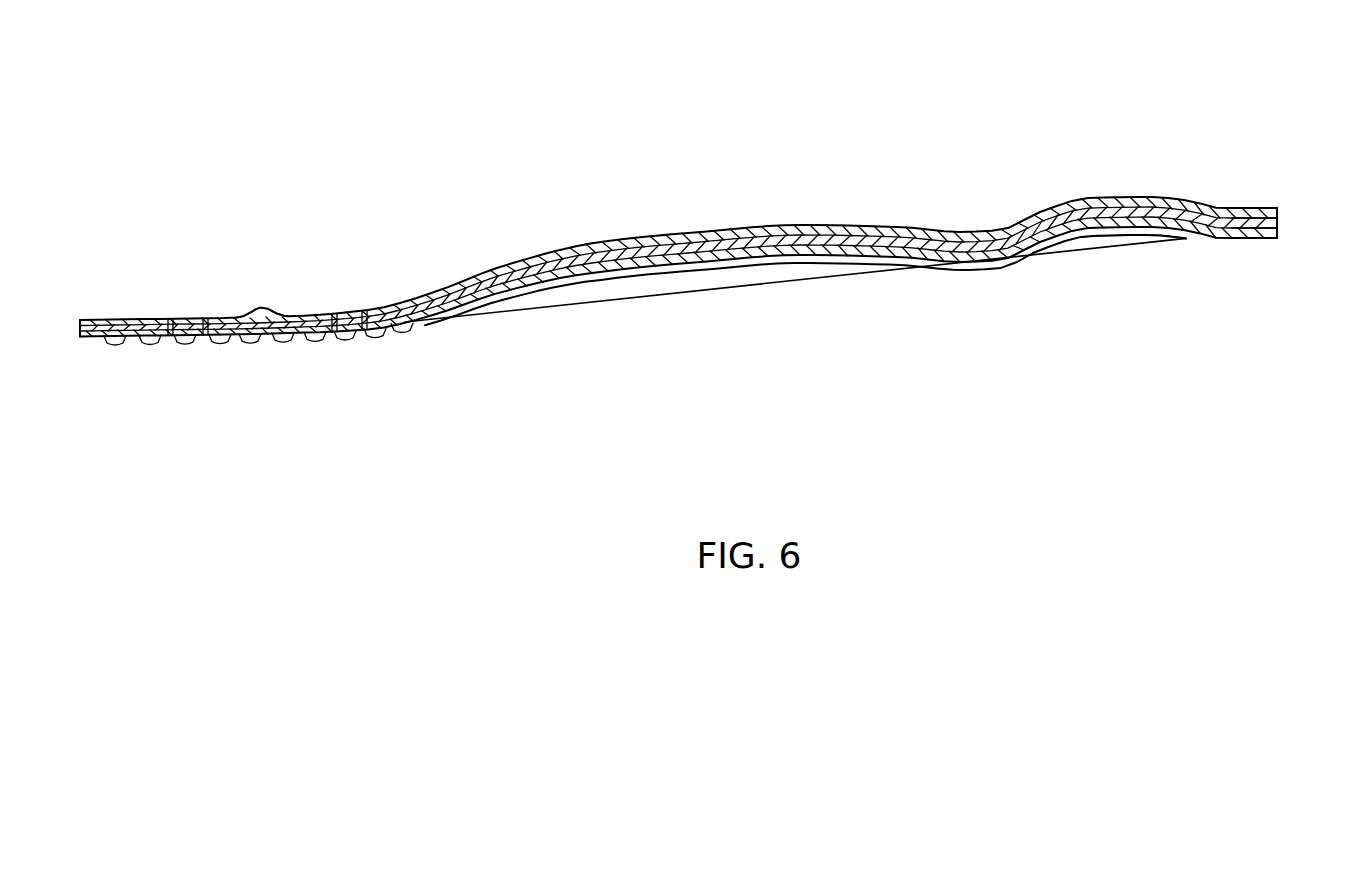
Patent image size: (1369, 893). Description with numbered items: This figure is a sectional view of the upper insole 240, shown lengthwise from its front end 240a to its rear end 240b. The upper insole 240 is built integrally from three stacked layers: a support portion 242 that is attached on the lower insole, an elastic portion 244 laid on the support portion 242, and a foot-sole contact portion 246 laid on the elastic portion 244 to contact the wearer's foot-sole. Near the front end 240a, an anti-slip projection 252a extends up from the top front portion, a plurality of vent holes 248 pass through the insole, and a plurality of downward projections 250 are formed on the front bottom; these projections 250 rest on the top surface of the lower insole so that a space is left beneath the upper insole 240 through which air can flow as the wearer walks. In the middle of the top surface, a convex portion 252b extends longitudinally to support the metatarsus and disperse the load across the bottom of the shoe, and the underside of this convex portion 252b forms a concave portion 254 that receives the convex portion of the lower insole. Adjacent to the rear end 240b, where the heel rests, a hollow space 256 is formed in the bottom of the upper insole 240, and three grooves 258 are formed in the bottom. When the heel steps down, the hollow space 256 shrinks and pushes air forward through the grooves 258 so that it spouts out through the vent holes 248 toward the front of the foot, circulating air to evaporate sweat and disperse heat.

The upper insole 240 is at (580, 146).
The front end 240a is at (95, 275).
The rear end 240b is at (1275, 178).
The support portion 242 is at (1276, 242).
The elastic portion 244 is at (1283, 222).
The foot-sole contact portion 246 is at (1282, 210).
The vent holes 248 is at (203, 318).
The downward projections 250 is at (205, 346).
The anti-slip projection 252a is at (249, 310).
The convex portion 252b is at (733, 228).
The concave portion 254 is at (704, 284).
The hollow space 256 is at (1131, 250).
The grooves 258 is at (567, 275).